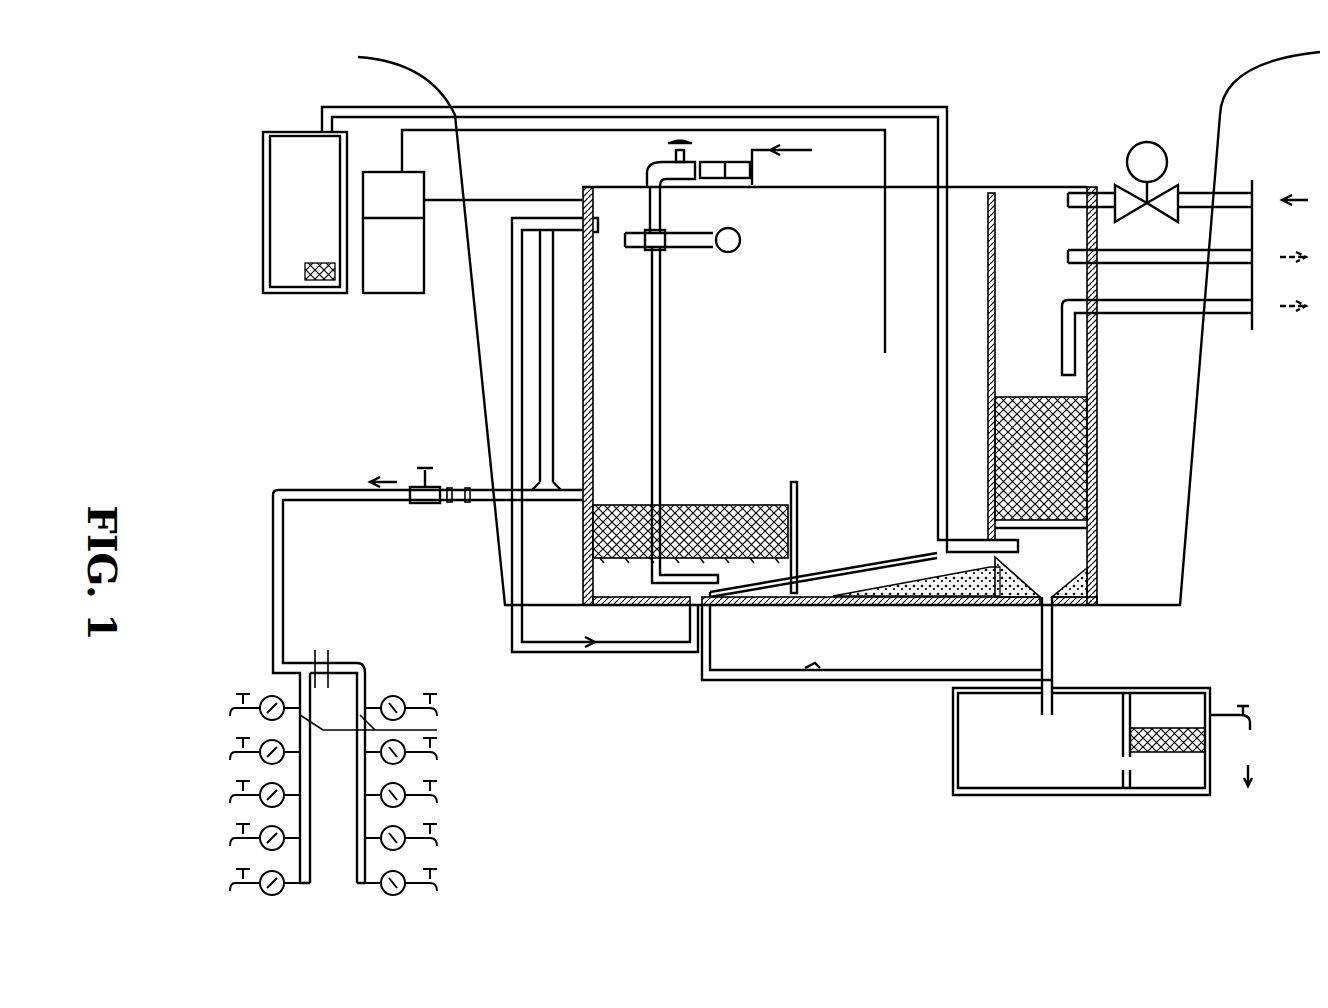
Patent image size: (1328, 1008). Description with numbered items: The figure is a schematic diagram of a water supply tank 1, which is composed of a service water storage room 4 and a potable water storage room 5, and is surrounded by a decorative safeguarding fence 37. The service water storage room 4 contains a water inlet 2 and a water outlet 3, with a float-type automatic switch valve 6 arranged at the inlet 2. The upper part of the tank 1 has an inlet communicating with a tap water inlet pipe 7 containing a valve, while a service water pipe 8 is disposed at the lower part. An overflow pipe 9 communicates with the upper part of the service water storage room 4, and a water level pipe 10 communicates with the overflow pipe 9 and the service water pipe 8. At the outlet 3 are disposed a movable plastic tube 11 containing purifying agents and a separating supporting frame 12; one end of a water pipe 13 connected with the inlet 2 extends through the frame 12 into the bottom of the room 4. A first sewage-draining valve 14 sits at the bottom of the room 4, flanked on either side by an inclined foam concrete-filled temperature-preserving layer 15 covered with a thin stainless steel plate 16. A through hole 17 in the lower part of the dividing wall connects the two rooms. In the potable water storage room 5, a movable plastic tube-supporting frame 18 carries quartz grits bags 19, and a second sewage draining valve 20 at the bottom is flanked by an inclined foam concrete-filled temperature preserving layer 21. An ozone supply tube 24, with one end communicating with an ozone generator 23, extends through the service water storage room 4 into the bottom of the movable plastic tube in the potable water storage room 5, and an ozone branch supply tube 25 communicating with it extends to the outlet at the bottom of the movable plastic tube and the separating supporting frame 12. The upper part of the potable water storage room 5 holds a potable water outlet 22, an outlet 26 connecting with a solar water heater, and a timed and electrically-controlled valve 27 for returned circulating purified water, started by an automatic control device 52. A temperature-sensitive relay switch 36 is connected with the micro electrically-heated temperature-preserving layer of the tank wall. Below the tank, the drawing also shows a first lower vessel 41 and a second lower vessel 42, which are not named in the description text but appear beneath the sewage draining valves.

The water supply tank 1 is at (590, 288).
The water inlet 2 is at (645, 180).
The water outlet 3 is at (588, 503).
The service water storage room 4 is at (839, 397).
The potable water storage room 5 is at (1020, 210).
The float-type automatic switch valve 6 is at (693, 247).
The tap water inlet pipe 7 is at (718, 165).
The service water pipe 8 is at (463, 488).
The overflow pipe 9 is at (510, 313).
The water level pipe 10 is at (540, 338).
The movable plastic tube 11 is at (710, 500).
The separating supporting frame 12 is at (797, 528).
The water pipe 13 is at (652, 342).
The first sewage-draining valve 14 is at (715, 620).
The foam concrete-filled temperature-preserving layer 15 is at (838, 605).
The thin stainless steel plate 16 is at (880, 575).
The through hole 17 is at (1017, 605).
The movable plastic tube-supporting frame 18 is at (1080, 530).
The quartz grits bags 19 is at (1100, 430).
The second sewage draining valve 20 is at (1055, 615).
The foam concrete-filled temperature preserving layer 21 is at (1085, 600).
The potable water outlet 22 is at (1098, 320).
The ozone generator 23 is at (277, 155).
The ozone supply tube 24 is at (952, 148).
The ozone branch supply tube 25 is at (825, 565).
The outlet connecting with a solar water heater 26 is at (1098, 268).
The timed and electrically-controlled valve 27 is at (1122, 188).
The temperature-sensitive relay switch 36 is at (410, 192).
The decorative safeguarding fence 37 is at (400, 63).
The storage tank 41 is at (995, 763).
The filter tank 42 is at (1178, 762).
The automatic control device 52 is at (370, 283).